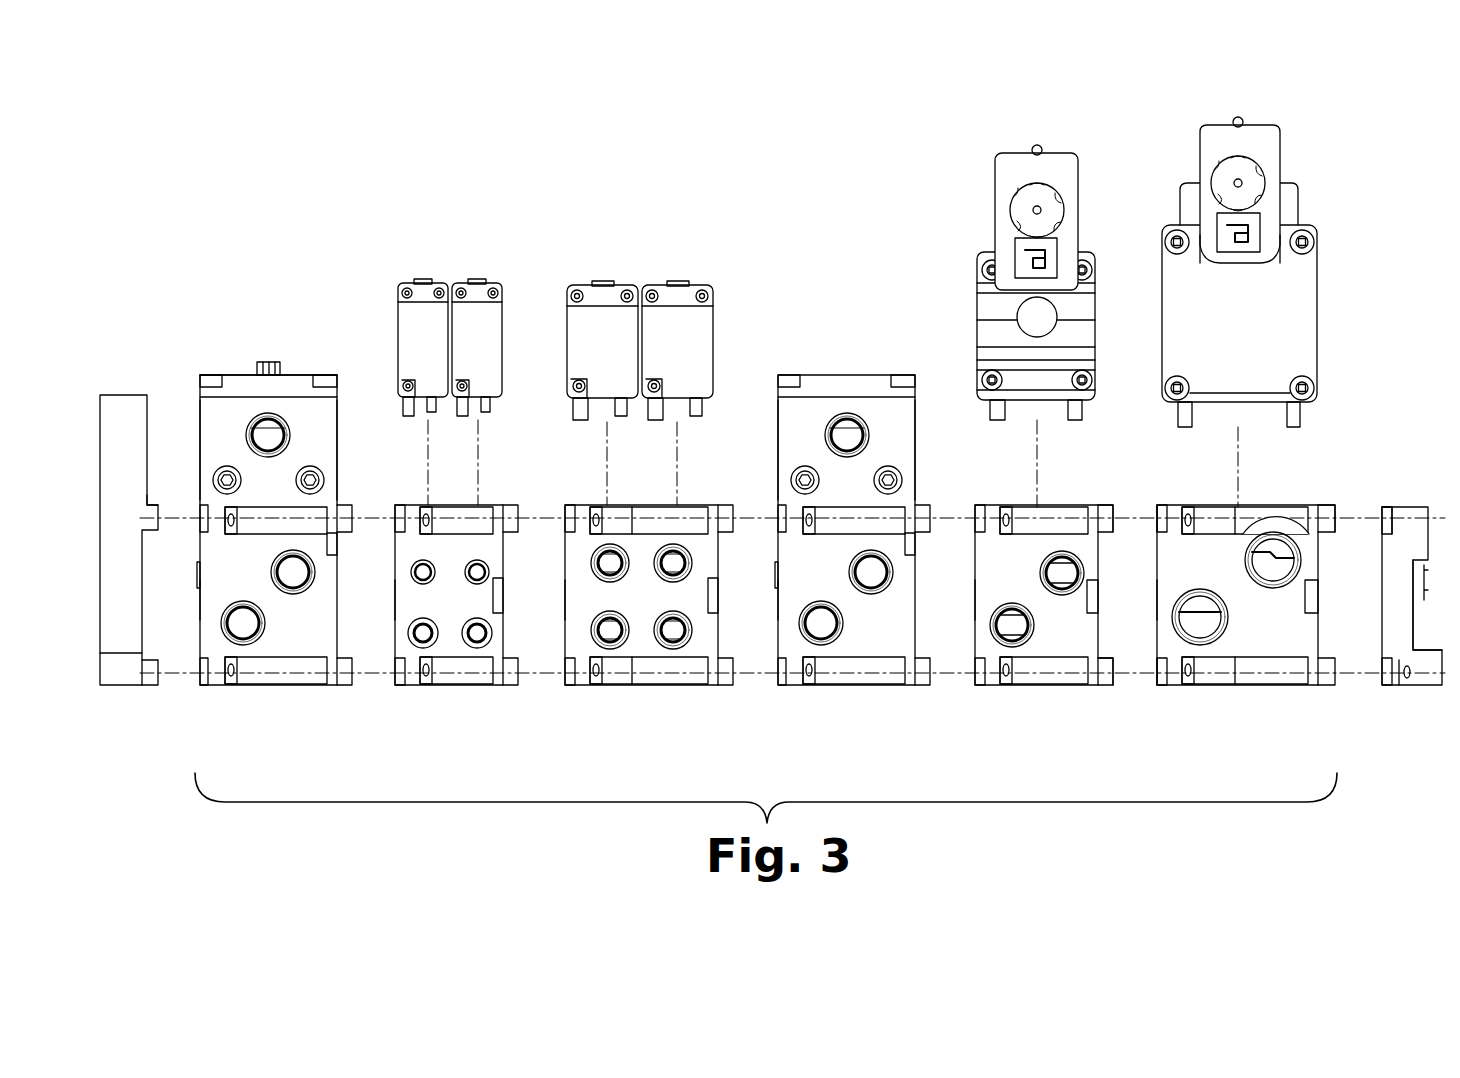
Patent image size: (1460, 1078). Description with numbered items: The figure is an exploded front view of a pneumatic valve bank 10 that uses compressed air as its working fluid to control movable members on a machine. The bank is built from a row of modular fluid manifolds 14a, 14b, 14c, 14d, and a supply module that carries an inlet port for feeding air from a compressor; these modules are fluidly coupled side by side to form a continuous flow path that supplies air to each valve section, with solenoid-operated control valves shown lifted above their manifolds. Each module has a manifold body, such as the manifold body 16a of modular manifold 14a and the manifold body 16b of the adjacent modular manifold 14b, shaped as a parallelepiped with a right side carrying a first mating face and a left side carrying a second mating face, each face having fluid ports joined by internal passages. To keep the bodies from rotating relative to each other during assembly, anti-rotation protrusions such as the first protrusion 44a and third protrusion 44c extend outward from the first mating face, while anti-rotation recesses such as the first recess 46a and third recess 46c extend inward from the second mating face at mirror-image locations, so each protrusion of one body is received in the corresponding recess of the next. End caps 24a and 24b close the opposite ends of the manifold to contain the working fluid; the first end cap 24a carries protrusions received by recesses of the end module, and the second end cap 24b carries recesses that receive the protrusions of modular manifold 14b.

The valve bank 10 is at (217, 107).
The modular fluid manifold 14a is at (1061, 609).
The modular fluid manifold 14b is at (1254, 616).
The modular fluid manifold 14c is at (474, 636).
The modular fluid manifold 14d is at (664, 636).
The manifold body 16a is at (1045, 652).
The manifold body 16b is at (1278, 645).
The end cap 24a is at (117, 687).
The end cap 24b is at (1433, 687).
The anti-rotation protrusion 44a is at (1115, 505).
The anti-rotation protrusion 44c is at (1115, 690).
The anti-rotation recess 46a is at (1155, 510).
The anti-rotation recess 46c is at (1157, 688).